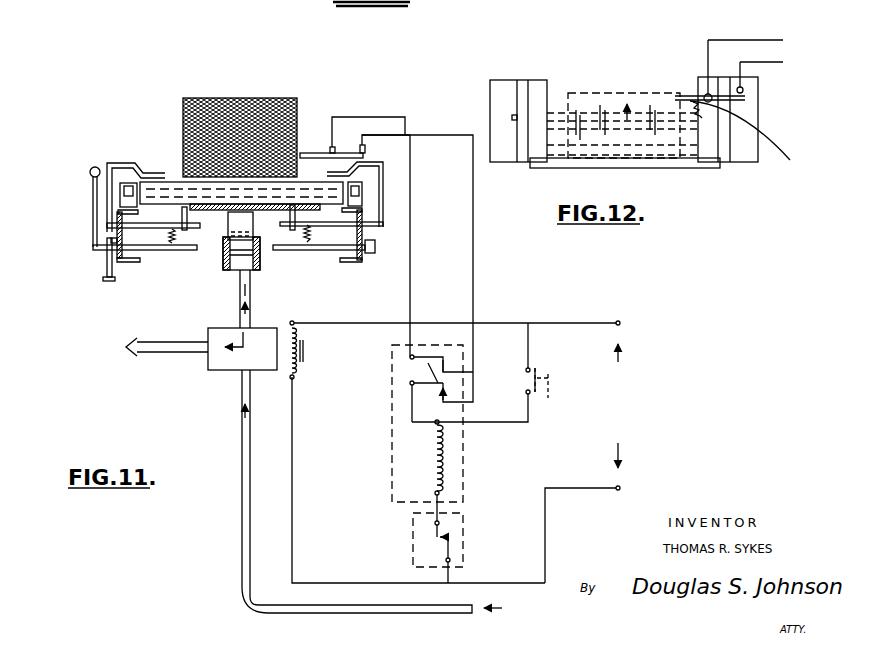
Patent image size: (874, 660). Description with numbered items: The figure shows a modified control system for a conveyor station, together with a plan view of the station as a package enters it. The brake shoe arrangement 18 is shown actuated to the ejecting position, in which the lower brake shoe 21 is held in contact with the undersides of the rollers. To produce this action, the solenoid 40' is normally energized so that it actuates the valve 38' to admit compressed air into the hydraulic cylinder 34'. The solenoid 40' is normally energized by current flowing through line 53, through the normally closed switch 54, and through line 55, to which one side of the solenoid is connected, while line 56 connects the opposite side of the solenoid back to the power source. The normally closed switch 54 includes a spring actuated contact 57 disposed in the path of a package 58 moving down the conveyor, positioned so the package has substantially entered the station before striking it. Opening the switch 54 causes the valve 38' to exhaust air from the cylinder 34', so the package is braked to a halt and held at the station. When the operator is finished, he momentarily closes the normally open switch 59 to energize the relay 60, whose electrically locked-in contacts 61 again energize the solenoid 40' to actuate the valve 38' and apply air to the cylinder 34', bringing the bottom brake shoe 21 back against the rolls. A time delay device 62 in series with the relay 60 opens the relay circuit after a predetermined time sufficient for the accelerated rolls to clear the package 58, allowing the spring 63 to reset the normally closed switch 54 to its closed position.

In FIG. 11, the brake shoe arrangement 18 is at (106, 152).
In FIG. 11, the lower brake shoe 21 is at (223, 208).
In FIG. 11, the package 58 is at (243, 98).
In FIG. 12, the package 58 is at (592, 110).
In FIG. 11, the normally closed switch 54 is at (327, 150).
In FIG. 11, the hydraulic cylinder 34' is at (261, 246).
In FIG. 11, the valve 38' is at (161, 344).
In FIG. 11, the solenoid 40' is at (316, 361).
In FIG. 11, the line 55 is at (410, 275).
In FIG. 11, the line 53 is at (573, 320).
In FIG. 11, the normally open switch 59 is at (543, 370).
In FIG. 11, the contacts 61 is at (432, 423).
In FIG. 11, the relay 60 is at (442, 462).
In FIG. 11, the time delay device 62 is at (453, 553).
In FIG. 11, the line 56 is at (349, 576).
In FIG. 12, the spring actuated contact 57 is at (680, 93).
In FIG. 12, the spring 63 is at (748, 138).